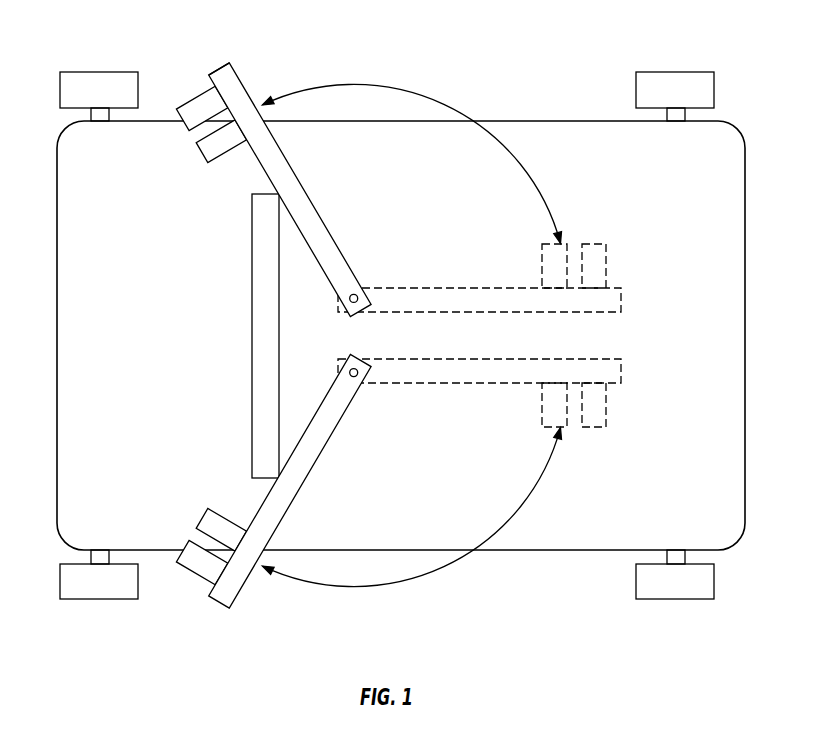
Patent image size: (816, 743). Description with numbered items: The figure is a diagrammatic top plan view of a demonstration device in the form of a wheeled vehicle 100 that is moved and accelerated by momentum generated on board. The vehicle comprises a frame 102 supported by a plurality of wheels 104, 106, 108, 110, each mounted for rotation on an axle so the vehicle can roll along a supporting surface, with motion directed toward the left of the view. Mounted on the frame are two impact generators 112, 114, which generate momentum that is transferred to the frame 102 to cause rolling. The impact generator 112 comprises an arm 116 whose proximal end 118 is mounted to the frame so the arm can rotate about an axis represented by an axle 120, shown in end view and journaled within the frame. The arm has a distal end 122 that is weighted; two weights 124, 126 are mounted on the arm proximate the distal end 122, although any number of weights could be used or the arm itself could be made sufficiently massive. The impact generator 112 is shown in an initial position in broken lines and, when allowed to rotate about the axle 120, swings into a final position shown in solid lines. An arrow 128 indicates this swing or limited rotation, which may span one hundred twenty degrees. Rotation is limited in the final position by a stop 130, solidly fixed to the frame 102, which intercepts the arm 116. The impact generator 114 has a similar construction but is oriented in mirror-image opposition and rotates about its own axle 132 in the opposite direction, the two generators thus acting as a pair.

The wheeled vehicle 100 is at (515, 78).
The frame 102 is at (175, 349).
The wheel 104 is at (93, 72).
The wheel 106 is at (663, 72).
The wheel 108 is at (665, 599).
The wheel 110 is at (103, 599).
The impact generator 112 is at (347, 168).
The impact generator 114 is at (368, 495).
The arm 116 is at (309, 200).
The proximal end 118 is at (392, 267).
The axle 120 is at (357, 293).
The distal end 122 is at (214, 68).
The weight 124 is at (185, 126).
The weight 126 is at (203, 152).
The arrow 128 is at (415, 95).
The stop 130 is at (252, 277).
The axle 132 is at (359, 381).